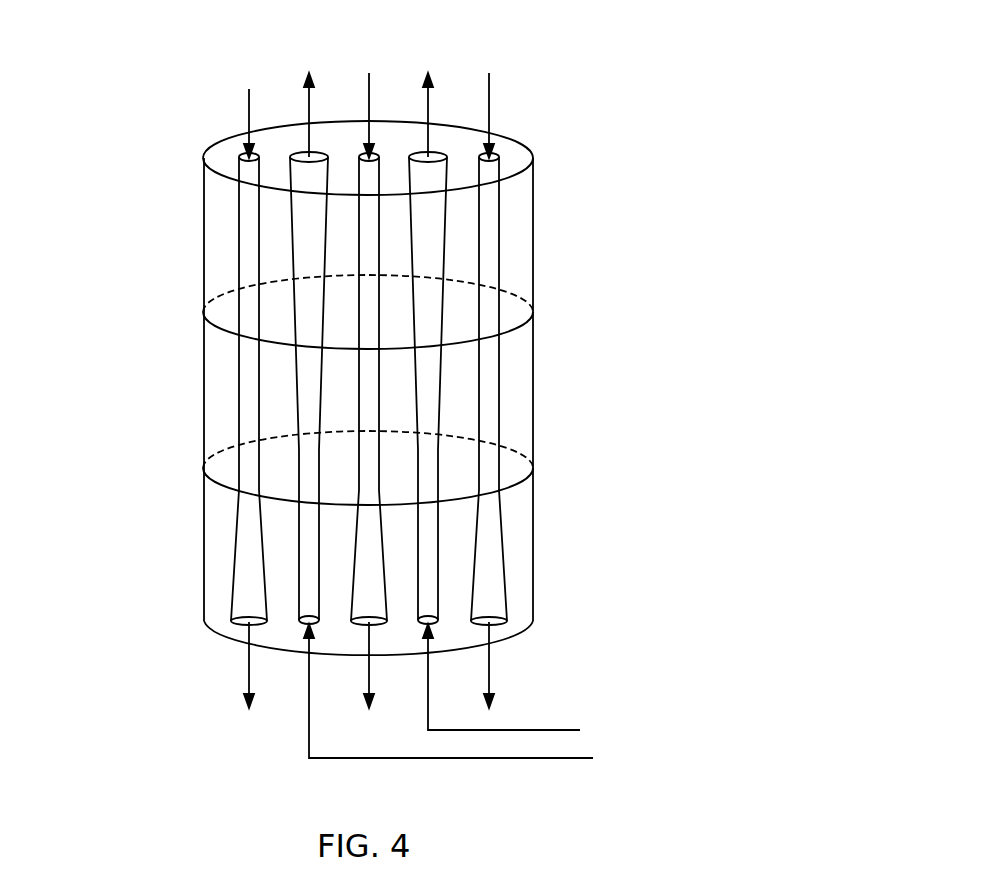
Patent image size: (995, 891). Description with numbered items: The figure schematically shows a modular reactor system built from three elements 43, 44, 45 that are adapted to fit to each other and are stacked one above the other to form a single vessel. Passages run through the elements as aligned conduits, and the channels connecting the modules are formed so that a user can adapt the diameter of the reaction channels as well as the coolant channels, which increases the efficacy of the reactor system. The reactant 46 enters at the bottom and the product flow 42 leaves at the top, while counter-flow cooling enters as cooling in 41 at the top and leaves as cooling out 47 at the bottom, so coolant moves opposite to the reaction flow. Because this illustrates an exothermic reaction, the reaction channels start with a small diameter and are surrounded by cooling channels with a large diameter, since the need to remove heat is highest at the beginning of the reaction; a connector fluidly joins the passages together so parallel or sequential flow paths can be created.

The counter-flow cooling inlet 41 is at (248, 112).
The product flow 42 is at (308, 110).
The first element 43 is at (218, 243).
The second element 44 is at (223, 422).
The third element 45 is at (222, 583).
The reactant 46 is at (580, 730).
The counter-flow cooling outlet 47 is at (488, 669).